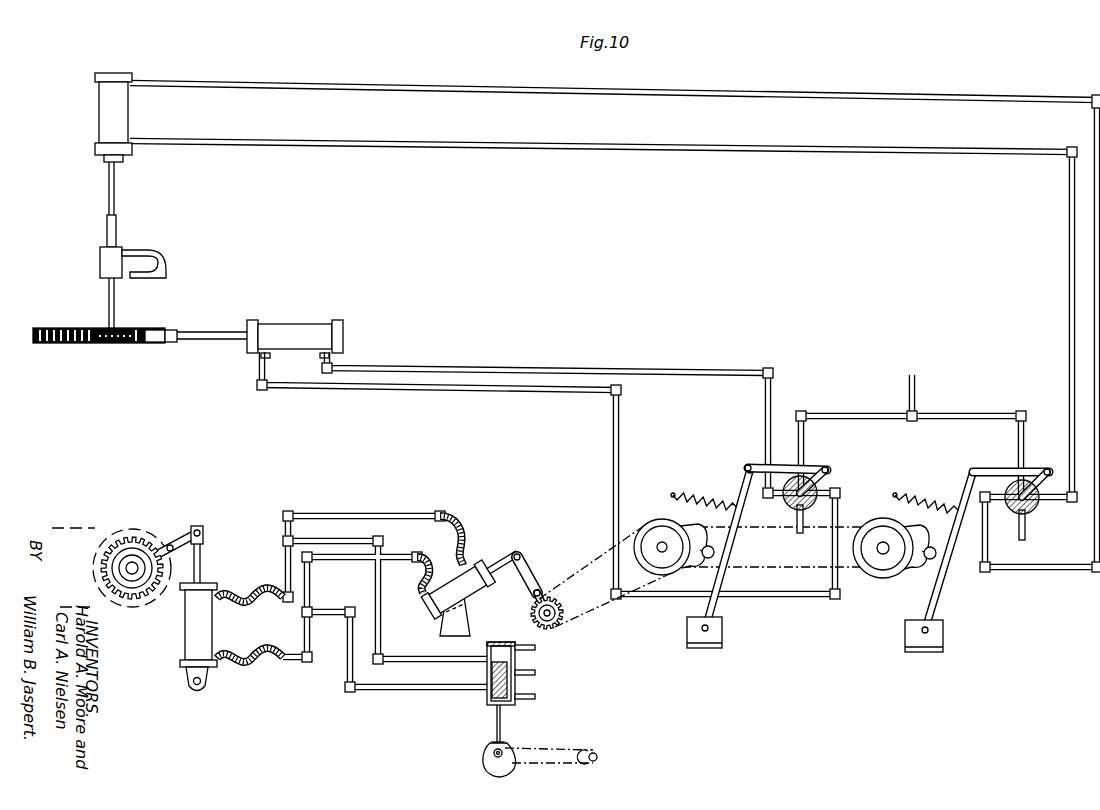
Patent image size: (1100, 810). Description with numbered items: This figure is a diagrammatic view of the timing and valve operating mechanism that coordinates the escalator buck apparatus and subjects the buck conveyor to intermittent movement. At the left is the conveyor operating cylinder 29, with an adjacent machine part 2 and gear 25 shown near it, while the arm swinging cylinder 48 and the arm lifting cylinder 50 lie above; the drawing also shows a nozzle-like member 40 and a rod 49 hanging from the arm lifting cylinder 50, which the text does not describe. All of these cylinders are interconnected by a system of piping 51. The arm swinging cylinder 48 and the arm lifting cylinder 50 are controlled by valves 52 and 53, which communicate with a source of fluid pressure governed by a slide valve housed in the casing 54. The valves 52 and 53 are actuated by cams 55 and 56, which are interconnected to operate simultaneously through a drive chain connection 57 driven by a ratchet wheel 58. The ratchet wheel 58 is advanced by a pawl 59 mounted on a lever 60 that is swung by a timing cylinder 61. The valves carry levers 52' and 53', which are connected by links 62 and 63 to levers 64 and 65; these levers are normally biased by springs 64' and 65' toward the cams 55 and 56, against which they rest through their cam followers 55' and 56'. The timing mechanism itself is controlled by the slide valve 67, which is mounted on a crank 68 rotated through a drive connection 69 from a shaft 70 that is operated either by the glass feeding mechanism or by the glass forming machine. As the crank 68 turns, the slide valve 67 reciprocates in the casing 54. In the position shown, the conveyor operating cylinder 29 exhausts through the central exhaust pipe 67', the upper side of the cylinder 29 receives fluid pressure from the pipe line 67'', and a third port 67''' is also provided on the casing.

The machine 2 is at (78, 528).
The gear 25 is at (136, 564).
The conveyor operating cylinder 29 is at (188, 638).
The nozzle 40 is at (163, 260).
The arm swinging cylinder 48 is at (290, 322).
The rod 49 is at (114, 196).
The arm lifting cylinder 50 is at (97, 118).
The system of piping 51 is at (697, 152).
The valve 52 is at (1010, 487).
The valve lever 52' is at (1038, 465).
The valve 53 is at (828, 494).
The valve lever 53' is at (829, 463).
The slide valve casing 54 is at (512, 663).
The cam 55 is at (670, 518).
The cam follower 55' is at (736, 548).
The cam 56 is at (889, 570).
The cam follower 56' is at (925, 537).
The drive chain connection 57 is at (585, 570).
The ratchet wheel 58 is at (566, 620).
The pawl 59 is at (538, 585).
The lever 60 is at (516, 575).
The timing cylinder 61 is at (432, 620).
The link 62 is at (985, 468).
The link 63 is at (780, 466).
The lever 64 is at (949, 560).
The spring 64' is at (926, 487).
The lever 65 is at (723, 557).
The spring 65' is at (704, 480).
The slide valve 67 is at (470, 720).
The central exhaust pipe 67' is at (551, 682).
The pipe line 67'' is at (546, 639).
The port 67''' is at (554, 705).
The crank 68 is at (505, 745).
The drive connection 69 is at (560, 748).
The shaft 70 is at (600, 758).